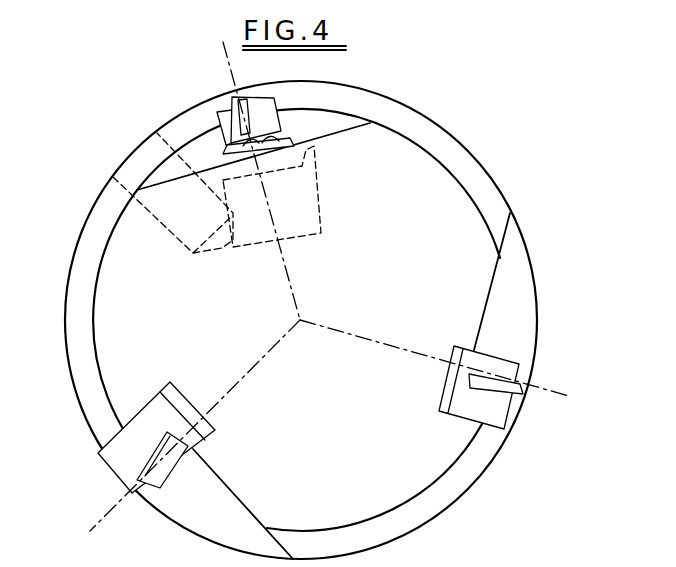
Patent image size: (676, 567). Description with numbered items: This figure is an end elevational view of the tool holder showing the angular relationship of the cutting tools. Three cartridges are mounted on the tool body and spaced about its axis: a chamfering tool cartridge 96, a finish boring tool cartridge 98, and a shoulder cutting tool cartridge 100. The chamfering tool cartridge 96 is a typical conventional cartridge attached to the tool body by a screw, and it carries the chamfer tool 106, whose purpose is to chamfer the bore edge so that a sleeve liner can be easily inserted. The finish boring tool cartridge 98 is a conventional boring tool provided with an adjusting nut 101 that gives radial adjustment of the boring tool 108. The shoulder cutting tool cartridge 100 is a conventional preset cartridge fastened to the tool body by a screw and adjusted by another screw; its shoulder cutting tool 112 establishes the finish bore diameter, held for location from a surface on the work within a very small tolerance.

The chamfering tool cartridge 96 is at (524, 427).
The finish boring tool cartridge 98 is at (324, 187).
The shoulder cutting tool cartridge 100 is at (103, 489).
The adjusting nut 101 is at (227, 150).
The chamfer tool 106 is at (496, 391).
The boring tool 108 is at (240, 100).
The shoulder cutting tool 112 is at (124, 492).